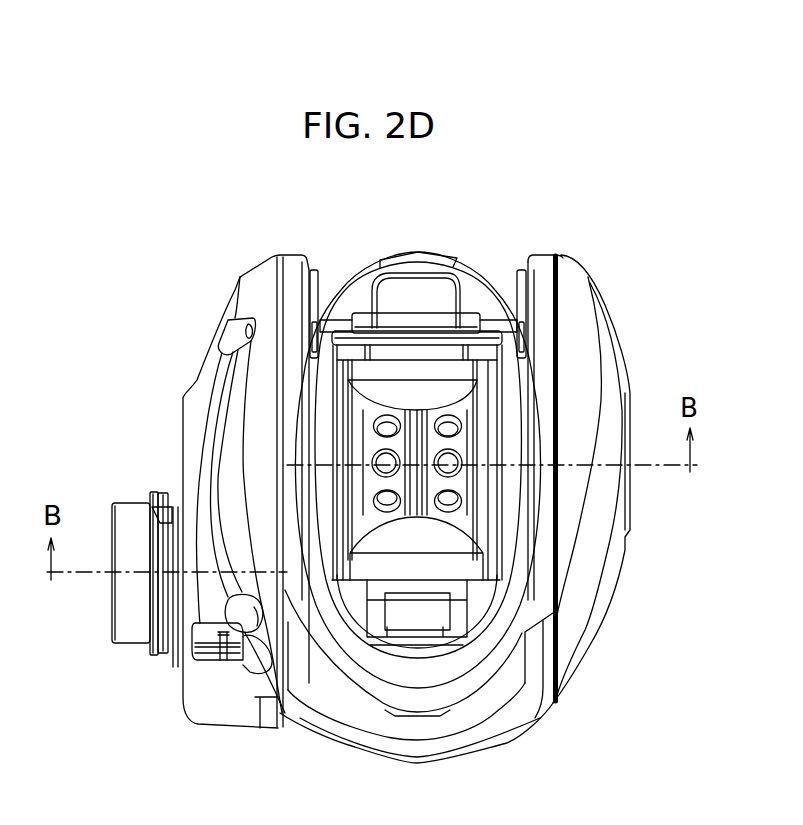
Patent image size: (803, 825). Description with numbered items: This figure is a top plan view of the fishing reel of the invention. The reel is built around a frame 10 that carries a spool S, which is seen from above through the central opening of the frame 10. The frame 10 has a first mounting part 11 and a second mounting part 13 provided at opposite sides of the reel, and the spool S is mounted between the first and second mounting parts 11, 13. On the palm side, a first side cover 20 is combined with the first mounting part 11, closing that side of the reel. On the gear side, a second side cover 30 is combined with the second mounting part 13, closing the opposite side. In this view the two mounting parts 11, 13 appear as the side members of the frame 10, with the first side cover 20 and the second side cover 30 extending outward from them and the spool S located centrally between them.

The frame 10 is at (323, 688).
The first mounting part 11 is at (553, 280).
The second mounting part 13 is at (293, 290).
The first side cover 20 is at (588, 332).
The second side cover 30 is at (200, 400).
The spool S is at (433, 413).